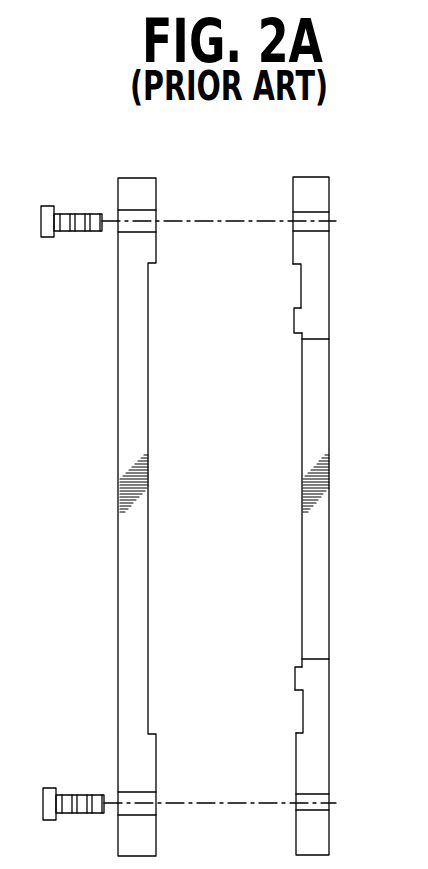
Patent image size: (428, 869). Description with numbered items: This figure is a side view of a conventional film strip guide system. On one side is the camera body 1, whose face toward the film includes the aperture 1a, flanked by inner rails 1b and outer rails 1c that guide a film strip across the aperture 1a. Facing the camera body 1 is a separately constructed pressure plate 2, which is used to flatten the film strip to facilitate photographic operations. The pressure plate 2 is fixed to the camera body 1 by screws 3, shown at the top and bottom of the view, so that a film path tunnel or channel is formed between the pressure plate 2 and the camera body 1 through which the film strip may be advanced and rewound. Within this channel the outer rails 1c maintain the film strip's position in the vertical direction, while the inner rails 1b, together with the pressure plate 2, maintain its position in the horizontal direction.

The camera body 1 is at (312, 177).
The aperture 1a is at (315, 340).
The inner rails 1b is at (293, 318).
The outer rails 1c is at (300, 268).
The pressure plate 2 is at (137, 195).
The screws 3 is at (43, 205).